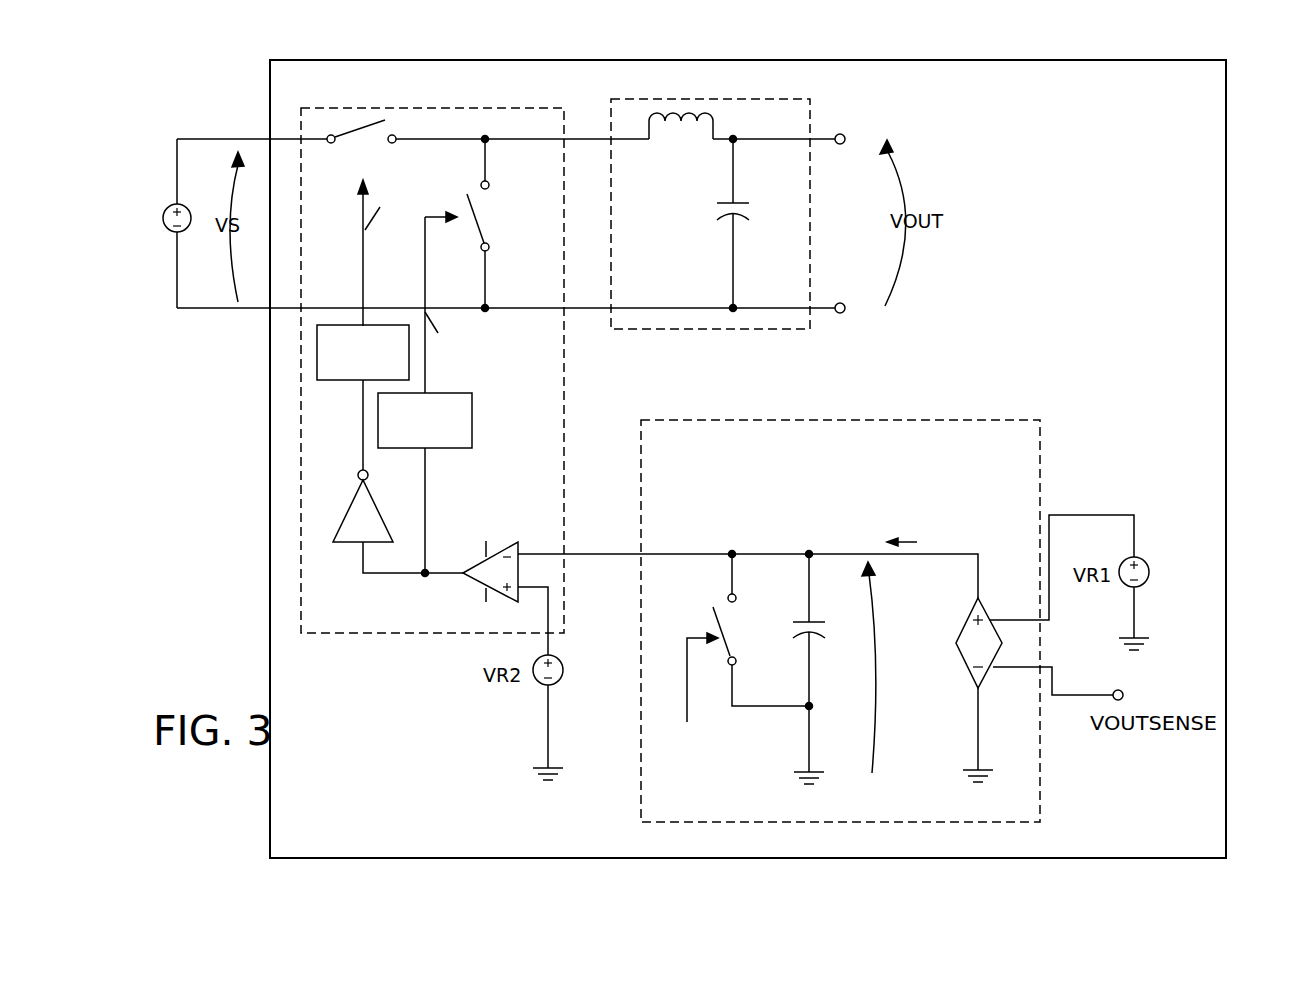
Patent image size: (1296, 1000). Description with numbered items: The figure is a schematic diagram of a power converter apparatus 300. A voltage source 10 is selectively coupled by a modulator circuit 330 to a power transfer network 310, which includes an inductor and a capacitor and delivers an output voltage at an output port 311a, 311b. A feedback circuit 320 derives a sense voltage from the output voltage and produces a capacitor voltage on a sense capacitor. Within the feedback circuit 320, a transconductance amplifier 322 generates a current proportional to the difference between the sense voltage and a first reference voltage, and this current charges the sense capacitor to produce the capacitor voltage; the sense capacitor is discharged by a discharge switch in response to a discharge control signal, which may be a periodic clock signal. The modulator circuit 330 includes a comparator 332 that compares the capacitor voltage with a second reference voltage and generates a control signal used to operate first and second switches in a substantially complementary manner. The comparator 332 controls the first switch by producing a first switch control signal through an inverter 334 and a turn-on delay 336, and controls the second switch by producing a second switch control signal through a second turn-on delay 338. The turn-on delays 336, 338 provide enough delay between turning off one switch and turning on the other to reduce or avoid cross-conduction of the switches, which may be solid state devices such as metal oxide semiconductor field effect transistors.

The voltage source 10 is at (165, 215).
The power converter apparatus 300 is at (1227, 452).
The power transfer network 310 is at (712, 98).
The output port 311a is at (845, 123).
The output port 311b is at (845, 315).
The feedback circuit 320 is at (840, 621).
The transconductance amplifier 322 is at (955, 628).
The modulator circuit 330 is at (389, 396).
The comparator 332 is at (486, 543).
The inverter 334 is at (357, 485).
The turn-on delay 336 is at (315, 355).
The second turn-on delay 338 is at (472, 420).